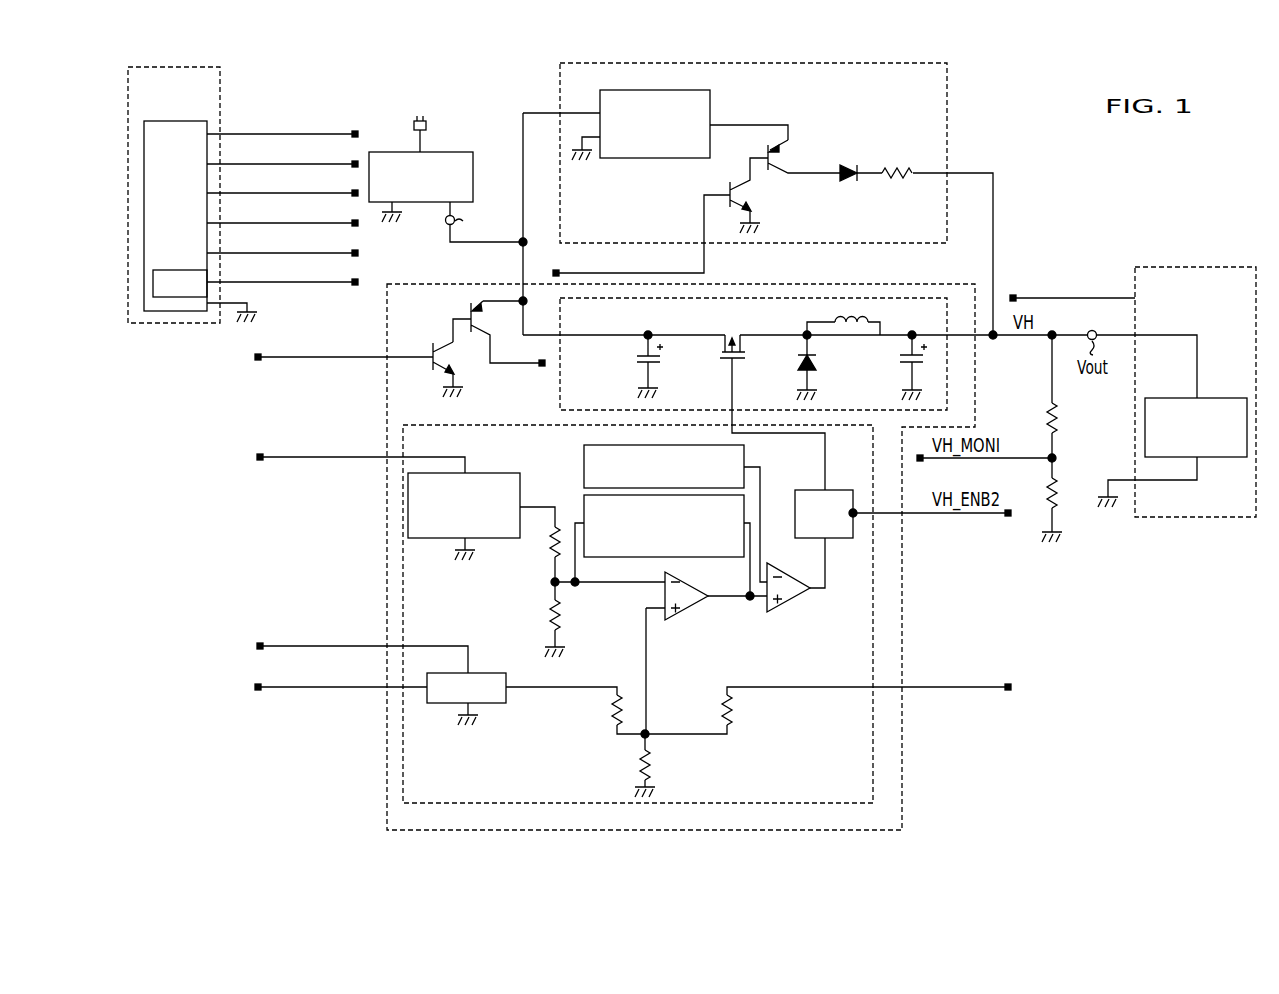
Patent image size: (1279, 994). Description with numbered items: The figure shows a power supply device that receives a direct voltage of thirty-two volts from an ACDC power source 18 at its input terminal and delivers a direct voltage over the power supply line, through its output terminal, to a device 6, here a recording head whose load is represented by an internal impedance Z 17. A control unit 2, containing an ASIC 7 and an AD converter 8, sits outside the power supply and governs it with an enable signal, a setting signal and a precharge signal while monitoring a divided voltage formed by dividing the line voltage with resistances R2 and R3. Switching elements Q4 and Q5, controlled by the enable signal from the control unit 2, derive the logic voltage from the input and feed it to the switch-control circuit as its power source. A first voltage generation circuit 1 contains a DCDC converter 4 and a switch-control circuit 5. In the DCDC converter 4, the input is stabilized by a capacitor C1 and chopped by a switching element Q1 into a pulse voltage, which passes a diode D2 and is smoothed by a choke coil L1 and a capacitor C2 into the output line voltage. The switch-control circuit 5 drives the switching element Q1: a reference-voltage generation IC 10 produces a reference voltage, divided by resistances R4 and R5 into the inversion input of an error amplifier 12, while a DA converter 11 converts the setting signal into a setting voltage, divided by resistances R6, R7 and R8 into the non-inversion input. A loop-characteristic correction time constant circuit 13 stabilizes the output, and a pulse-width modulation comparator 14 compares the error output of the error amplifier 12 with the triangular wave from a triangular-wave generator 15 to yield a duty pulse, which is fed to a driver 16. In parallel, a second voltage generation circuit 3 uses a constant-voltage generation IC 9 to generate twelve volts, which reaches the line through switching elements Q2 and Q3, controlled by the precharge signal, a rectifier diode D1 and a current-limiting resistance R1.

The first voltage generation circuit 1 is at (904, 819).
The control unit 2 is at (222, 81).
The second voltage generation circuit 3 is at (560, 88).
The DCDC converter 4 is at (560, 311).
The switch-control circuit 5 is at (875, 797).
The device 6 is at (1165, 267).
The ASIC 7 is at (174, 324).
The AD converter 8 is at (169, 269).
The constant-voltage generation IC 9 is at (653, 160).
The reference-voltage generation IC 10 is at (489, 473).
The DA converter 11 is at (489, 673).
The error amplifier 12 is at (688, 620).
The loop-characteristic correction time constant circuit 13 is at (705, 557).
The pulse-width modulation comparator 14 is at (790, 612).
The triangular-wave generator 15 is at (584, 463).
The driver 16 is at (843, 490).
The internal impedance Z 17 is at (1225, 398).
The ACDC power source 18 is at (462, 151).
The switching element Q1 is at (722, 360).
The switching element Q2 is at (742, 196).
The switching element Q3 is at (768, 142).
The switching element Q4 is at (447, 358).
The switching element Q5 is at (470, 305).
The current-limiting resistance R1 is at (898, 163).
The resistance R2 is at (1058, 416).
The resistance R3 is at (1058, 490).
The resistance R4 is at (548, 558).
The resistance R5 is at (548, 608).
The resistance R6 is at (719, 707).
The resistance R7 is at (612, 707).
The resistance R8 is at (639, 757).
The capacitor C1 is at (635, 360).
The capacitor C2 is at (899, 360).
The diode D1 is at (847, 162).
The diode D2 is at (801, 361).
The choke coil L1 is at (831, 317).